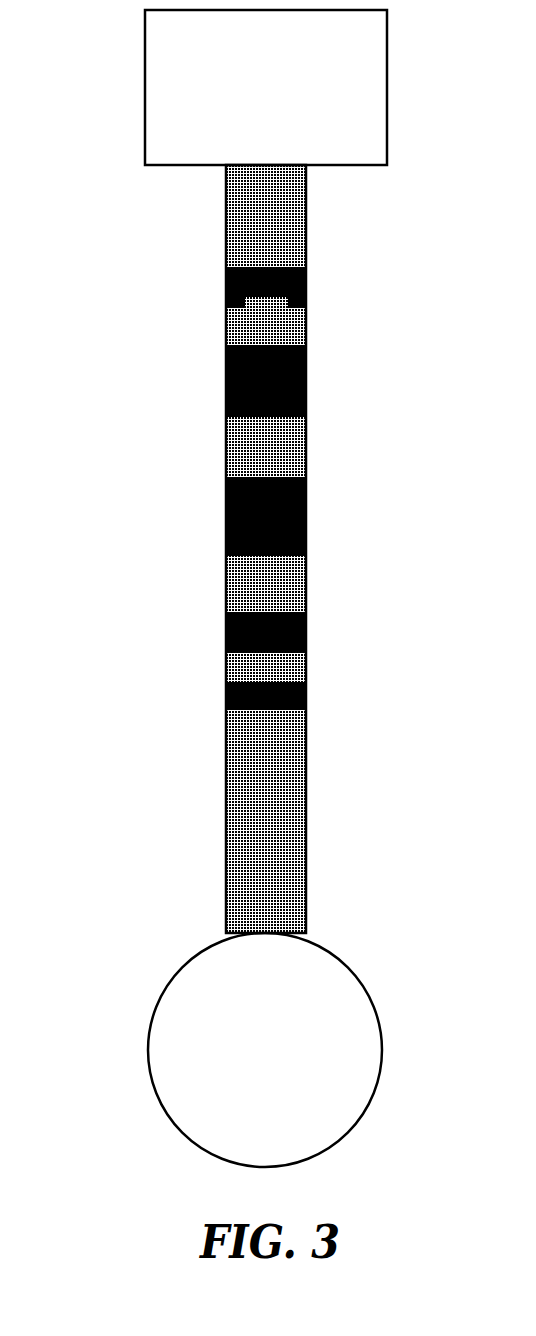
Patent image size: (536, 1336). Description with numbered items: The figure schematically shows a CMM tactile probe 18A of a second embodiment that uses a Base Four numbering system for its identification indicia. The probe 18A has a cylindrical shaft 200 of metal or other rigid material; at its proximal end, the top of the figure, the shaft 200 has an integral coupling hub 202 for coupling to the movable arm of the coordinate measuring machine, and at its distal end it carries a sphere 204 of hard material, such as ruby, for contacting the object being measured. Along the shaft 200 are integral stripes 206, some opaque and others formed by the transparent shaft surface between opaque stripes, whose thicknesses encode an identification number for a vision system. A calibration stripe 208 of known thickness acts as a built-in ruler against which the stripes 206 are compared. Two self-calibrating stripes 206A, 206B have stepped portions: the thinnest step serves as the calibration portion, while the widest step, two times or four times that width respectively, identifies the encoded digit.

The tactile probe 18A is at (364, 323).
The cylindrical shaft 200 is at (226, 445).
The integral coupling hub 202 is at (238, 106).
The sphere 204 is at (238, 1066).
The integral stripes 206 is at (226, 690).
The self-calibrating stripe 206A is at (226, 286).
The self-calibrating stripe 206B is at (226, 373).
The calibration stripe 208 is at (257, 808).